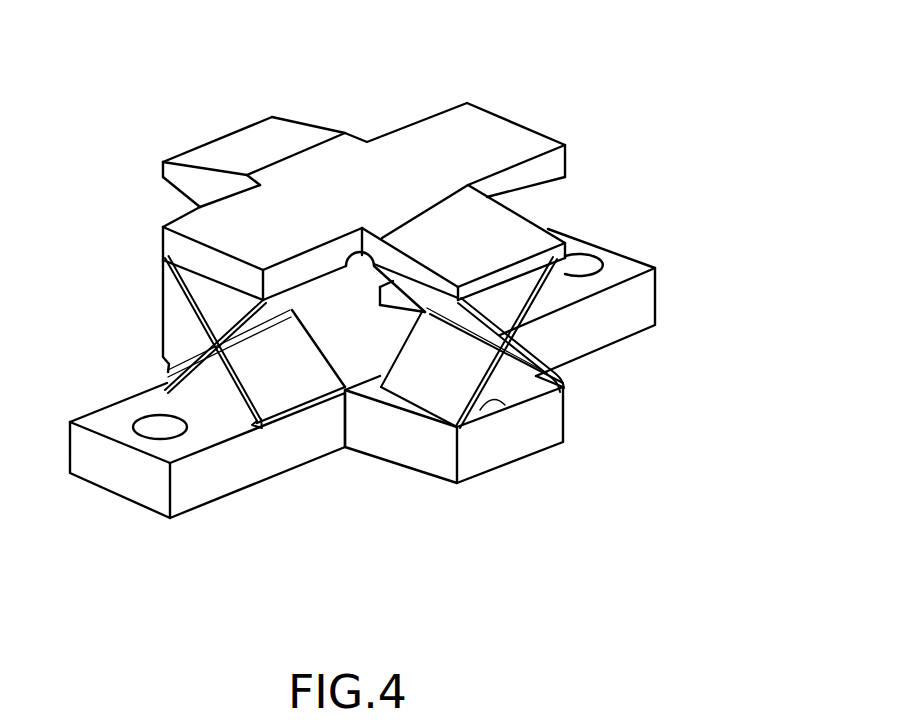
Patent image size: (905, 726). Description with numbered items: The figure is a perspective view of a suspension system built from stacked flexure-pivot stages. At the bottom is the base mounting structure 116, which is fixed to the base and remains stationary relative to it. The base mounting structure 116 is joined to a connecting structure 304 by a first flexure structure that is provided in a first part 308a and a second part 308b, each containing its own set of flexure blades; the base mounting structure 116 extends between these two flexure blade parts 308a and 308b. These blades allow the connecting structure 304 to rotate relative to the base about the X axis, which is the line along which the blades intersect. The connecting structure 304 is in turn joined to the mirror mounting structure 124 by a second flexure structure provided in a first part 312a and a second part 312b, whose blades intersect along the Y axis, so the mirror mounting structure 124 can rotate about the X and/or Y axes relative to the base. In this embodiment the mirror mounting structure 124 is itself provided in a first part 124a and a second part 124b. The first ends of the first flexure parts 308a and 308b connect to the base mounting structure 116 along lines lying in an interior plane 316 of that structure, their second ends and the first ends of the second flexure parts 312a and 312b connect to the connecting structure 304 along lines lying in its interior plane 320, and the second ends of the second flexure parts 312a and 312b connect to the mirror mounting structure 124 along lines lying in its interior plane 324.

The connecting structure 304 is at (460, 118).
The first part of the first flexure structure 308a is at (170, 188).
The second part of the first flexure structure 308b is at (540, 340).
The first part of the second flexure structure 312a is at (170, 340).
The second part of the second flexure structure 312b is at (522, 208).
The interior plane of the base mounting structure 316 is at (493, 402).
The interior plane of the connecting structure 320 is at (167, 282).
The interior plane of the mirror mounting structure 324 is at (103, 413).
The base mounting structure 116 is at (425, 458).
The mirror mounting structure 124 is at (228, 483).
The first part of the mirror mounting structure 124a is at (115, 477).
The second part of the mirror mounting structure 124b is at (642, 303).